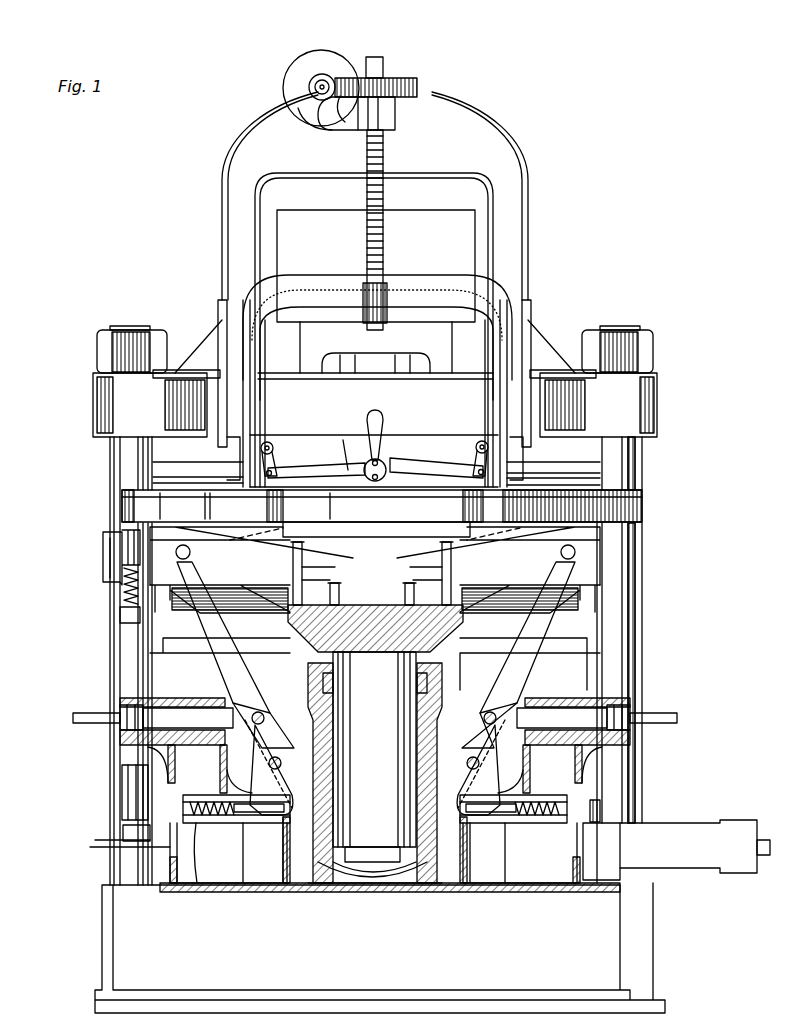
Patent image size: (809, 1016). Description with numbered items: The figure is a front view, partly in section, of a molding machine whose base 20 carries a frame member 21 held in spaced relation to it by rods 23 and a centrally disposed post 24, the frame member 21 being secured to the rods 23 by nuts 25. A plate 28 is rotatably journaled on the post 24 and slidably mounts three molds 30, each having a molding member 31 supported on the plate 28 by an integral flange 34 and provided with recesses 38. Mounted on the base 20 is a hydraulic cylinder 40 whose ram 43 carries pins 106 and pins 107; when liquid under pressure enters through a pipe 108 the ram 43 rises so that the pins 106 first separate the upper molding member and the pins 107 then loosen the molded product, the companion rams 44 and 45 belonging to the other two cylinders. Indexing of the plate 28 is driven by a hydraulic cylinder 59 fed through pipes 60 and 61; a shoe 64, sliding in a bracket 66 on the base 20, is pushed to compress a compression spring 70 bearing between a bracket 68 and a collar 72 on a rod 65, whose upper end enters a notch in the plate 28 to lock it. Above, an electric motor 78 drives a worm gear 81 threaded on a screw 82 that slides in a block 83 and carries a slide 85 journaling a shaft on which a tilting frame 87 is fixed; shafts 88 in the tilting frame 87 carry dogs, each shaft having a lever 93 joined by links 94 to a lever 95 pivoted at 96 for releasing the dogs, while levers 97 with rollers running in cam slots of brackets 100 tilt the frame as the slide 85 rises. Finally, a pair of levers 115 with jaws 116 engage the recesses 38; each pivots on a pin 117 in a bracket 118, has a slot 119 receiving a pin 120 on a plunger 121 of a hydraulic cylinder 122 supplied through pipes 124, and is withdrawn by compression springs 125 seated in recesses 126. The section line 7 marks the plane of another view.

The section line 7 is at (374, 57).
The base 20 is at (118, 935).
The frame member 21 is at (92, 405).
The rods 23 is at (643, 619).
The post 24 is at (362, 356).
The nuts 25 is at (96, 345).
The plate 28 is at (120, 510).
The molds 30 is at (372, 574).
The molding member 31 is at (462, 543).
The flange 34 is at (468, 532).
The recesses 38 is at (251, 556).
The hydraulic cylinder 40 is at (440, 880).
The ram 43 is at (374, 757).
The ram 44 is at (220, 619).
The ram 45 is at (530, 637).
The hydraulic cylinder 59 is at (705, 822).
The pipe 60 is at (601, 805).
The pipe 61 is at (764, 856).
The shoe 64 is at (122, 830).
The rod 65 is at (122, 655).
The bracket 66 is at (121, 795).
The bracket 68 is at (102, 553).
The compression spring 70 is at (124, 592).
The collar 72 is at (119, 617).
The electric motor 78 is at (316, 58).
The worm gear 81 is at (412, 80).
The screw 82 is at (386, 165).
The block 83 is at (397, 118).
The slide 85 is at (420, 278).
The tilting frame 87 is at (347, 466).
The shafts 88 is at (268, 441).
The lever 93 is at (273, 452).
The links 94 is at (318, 462).
The lever 95 is at (375, 410).
The pivot 96 is at (378, 482).
The levers 97 is at (226, 451).
The brackets 100 is at (216, 309).
The pins 106 is at (292, 577).
The pins 107 is at (404, 591).
The pipe 108 is at (395, 868).
The levers 115 is at (210, 665).
The jaws 116 is at (180, 548).
The pin 117 is at (250, 760).
The brackets 118 is at (172, 855).
The slot 119 is at (262, 718).
The pin 120 is at (262, 712).
The plunger 121 is at (180, 712).
The hydraulic cylinder 122 is at (122, 707).
The pipes 124 is at (72, 716).
The compression springs 125 is at (198, 823).
The recesses 126 is at (196, 885).